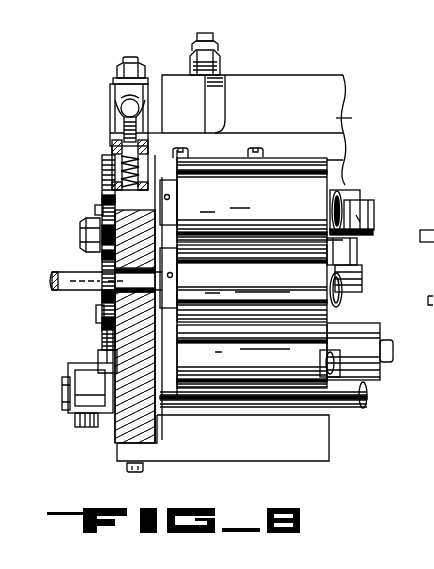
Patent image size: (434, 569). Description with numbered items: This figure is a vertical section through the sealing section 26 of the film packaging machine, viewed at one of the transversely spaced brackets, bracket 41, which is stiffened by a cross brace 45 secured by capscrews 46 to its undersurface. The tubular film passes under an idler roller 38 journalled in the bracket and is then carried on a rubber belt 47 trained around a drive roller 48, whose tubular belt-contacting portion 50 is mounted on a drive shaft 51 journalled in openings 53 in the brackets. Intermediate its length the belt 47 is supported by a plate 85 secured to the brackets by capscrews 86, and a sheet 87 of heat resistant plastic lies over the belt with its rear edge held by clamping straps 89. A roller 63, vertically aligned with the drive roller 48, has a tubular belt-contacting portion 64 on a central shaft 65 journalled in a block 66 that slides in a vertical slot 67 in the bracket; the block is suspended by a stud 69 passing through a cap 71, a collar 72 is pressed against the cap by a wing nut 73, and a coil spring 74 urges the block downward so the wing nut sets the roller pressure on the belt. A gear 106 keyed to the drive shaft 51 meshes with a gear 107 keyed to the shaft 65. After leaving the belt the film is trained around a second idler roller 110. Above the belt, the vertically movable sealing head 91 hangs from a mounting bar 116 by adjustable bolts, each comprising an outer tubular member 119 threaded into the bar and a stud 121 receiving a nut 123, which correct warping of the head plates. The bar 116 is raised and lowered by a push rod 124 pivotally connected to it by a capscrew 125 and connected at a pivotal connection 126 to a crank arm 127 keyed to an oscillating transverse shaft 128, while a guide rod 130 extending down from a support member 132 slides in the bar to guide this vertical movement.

The guide rod 130 is at (130, 60).
The support member 132 is at (125, 90).
The stud 69 is at (130, 108).
The wing nut 73 is at (127, 118).
The collar 72 is at (162, 134).
The cap 71 is at (112, 148).
The vertical slot 67 is at (120, 170).
The coil spring 74 is at (115, 181).
The stud 121 is at (217, 35).
The outer tubular member 119 is at (195, 57).
The nut 123 is at (222, 45).
The mounting bar 116 is at (281, 88).
The sealing head 91 is at (345, 119).
The roller 63 is at (250, 195).
The tubular belt-contacting portion 64 is at (330, 173).
The central shaft 65 is at (355, 192).
The clamping straps 89 is at (355, 217).
The sheet of heat resistant plastic material 87 is at (420, 236).
The capscrews 86 is at (416, 222).
The block 66 is at (172, 198).
The rubber belt 47 is at (252, 283).
The drive roller 48 is at (333, 267).
The openings 53 is at (140, 272).
The plate 85 is at (347, 257).
The drive shaft 51 is at (362, 277).
The tubular belt-contacting portion 50 is at (342, 303).
The idler roller 38 is at (252, 356).
The second idler roller 110 is at (365, 338).
The transverse shaft 128 is at (340, 403).
The gear 107 is at (100, 216).
The capscrew 125 is at (88, 240).
The gear 106 is at (100, 313).
The push rod 124 is at (100, 333).
The pivotal connection 126 is at (63, 403).
The crank arm 127 is at (90, 423).
The bracket 41 is at (130, 423).
The cross brace 45 is at (223, 438).
The capscrews 46 is at (143, 470).
The sealing section 26 is at (312, 427).